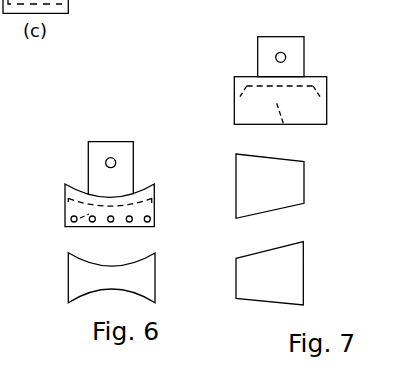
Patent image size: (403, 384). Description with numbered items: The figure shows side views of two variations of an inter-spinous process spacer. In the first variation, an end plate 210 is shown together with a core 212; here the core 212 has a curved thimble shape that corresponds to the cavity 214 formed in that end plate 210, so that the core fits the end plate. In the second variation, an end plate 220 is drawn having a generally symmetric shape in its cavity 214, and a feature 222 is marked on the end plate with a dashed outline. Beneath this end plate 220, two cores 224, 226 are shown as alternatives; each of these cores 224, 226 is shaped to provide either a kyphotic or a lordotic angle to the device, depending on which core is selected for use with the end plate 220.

In FIG. 6, the end plate 210 is at (147, 185).
In FIG. 6, the core 212 is at (155, 277).
In FIG. 6, the cavity 214 is at (76, 229).
In FIG. 7, the end plate 220 is at (234, 122).
In FIG. 7, the cutting line / insert 222 is at (283, 124).
In FIG. 7, the core 224 is at (297, 185).
In FIG. 7, the core 226 is at (297, 278).